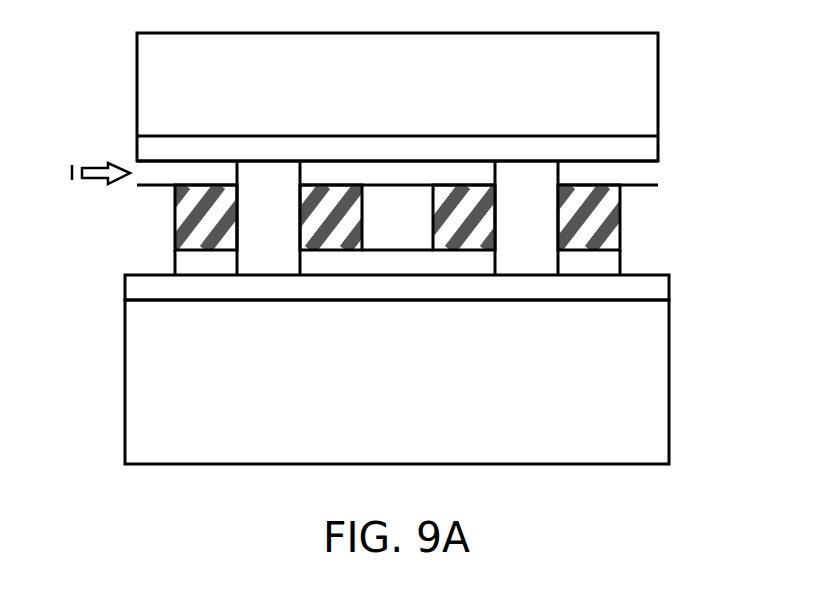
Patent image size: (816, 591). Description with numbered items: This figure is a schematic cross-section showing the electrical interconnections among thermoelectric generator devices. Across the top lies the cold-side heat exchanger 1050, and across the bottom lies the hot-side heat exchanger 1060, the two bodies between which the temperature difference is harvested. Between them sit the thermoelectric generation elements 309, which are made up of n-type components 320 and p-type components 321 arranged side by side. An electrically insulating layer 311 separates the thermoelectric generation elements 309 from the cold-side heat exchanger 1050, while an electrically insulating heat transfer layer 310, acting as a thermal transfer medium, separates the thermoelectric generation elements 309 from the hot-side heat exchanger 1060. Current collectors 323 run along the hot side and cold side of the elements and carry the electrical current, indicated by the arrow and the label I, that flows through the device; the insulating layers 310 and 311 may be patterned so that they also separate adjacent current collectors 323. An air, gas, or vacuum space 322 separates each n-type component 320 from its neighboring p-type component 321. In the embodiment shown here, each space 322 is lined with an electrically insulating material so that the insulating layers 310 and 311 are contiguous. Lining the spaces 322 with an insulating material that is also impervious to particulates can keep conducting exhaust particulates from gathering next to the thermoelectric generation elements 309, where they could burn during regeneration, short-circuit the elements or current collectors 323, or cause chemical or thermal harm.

The cold-side heat exchanger 1050 is at (137, 64).
The electrically insulating layer 311 is at (137, 148).
The thermoelectric generation elements 309 is at (175, 203).
The n-type components 320 is at (175, 236).
The p-type components 321 is at (336, 238).
The space 322 is at (257, 238).
The current collectors 323 is at (645, 172).
The electrically insulating heat transfer layer 310 is at (125, 288).
The hot-side heat exchanger 1060 is at (200, 455).